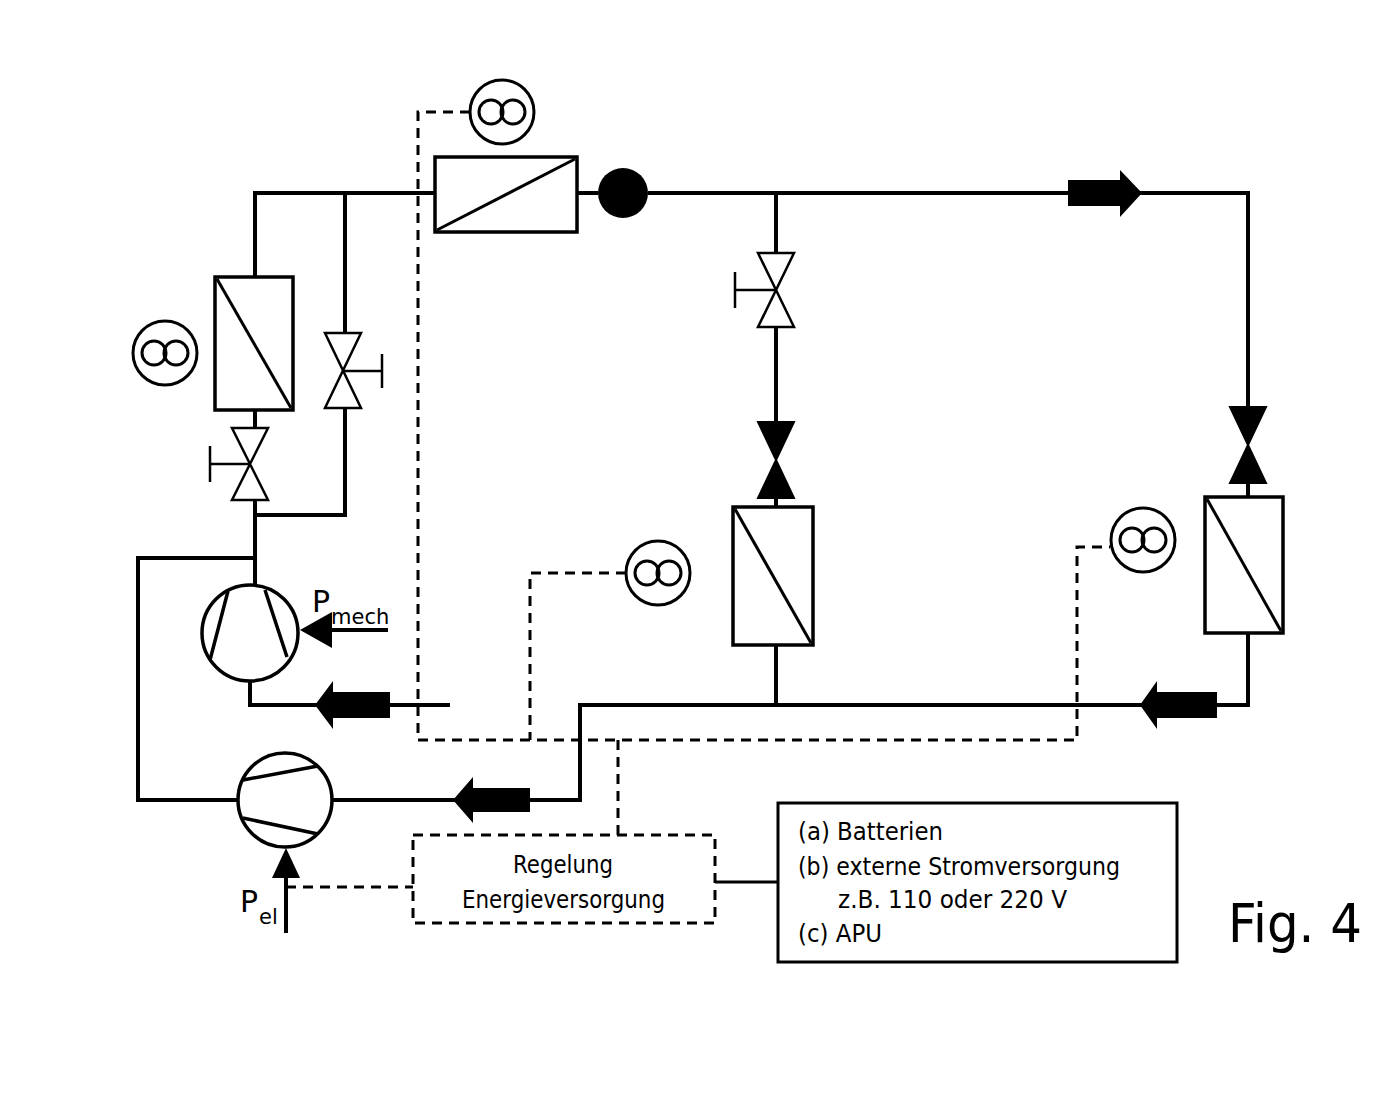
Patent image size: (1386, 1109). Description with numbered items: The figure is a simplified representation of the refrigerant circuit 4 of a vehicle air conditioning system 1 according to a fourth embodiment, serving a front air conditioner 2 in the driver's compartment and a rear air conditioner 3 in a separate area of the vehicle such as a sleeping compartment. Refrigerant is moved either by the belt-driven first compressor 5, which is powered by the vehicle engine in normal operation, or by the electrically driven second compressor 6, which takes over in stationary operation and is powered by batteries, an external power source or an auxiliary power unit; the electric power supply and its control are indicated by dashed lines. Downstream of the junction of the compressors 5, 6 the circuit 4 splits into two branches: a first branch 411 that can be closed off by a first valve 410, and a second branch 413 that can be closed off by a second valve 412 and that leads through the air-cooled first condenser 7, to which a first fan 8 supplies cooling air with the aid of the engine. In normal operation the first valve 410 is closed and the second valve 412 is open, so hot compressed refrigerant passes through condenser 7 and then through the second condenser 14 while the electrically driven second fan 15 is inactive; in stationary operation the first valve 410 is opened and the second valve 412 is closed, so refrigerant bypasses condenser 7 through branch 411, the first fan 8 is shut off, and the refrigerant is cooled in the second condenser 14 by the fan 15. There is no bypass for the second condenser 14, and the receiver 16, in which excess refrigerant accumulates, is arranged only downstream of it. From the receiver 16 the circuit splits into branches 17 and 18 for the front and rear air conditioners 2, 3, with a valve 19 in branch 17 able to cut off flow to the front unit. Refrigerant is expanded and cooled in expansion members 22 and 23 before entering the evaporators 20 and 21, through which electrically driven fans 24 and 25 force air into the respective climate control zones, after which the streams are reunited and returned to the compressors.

The vehicle air conditioning system 1 is at (1296, 174).
The front air conditioner 2 is at (860, 630).
The rear air conditioner 3 is at (1312, 695).
The refrigerant circuit 4 is at (746, 192).
The first compressor 5 is at (235, 648).
The second compressor 6 is at (275, 804).
The first condenser 7 is at (235, 330).
The first fan 8 is at (167, 366).
The second condenser 14 is at (530, 208).
The second fan 15 is at (535, 98).
The receiver 16 is at (638, 173).
The branch 17 is at (775, 378).
The branch 18 is at (1243, 322).
The valve 19 is at (780, 292).
The evaporator 20 is at (780, 562).
The evaporator 21 is at (1268, 550).
The expansion member 22 is at (782, 478).
The expansion member 23 is at (1253, 460).
The fan 24 is at (640, 560).
The fan 25 is at (1125, 520).
The first valve 410 is at (356, 365).
The first branch 411 is at (337, 237).
The second valve 412 is at (240, 468).
The second branch 413 is at (250, 236).